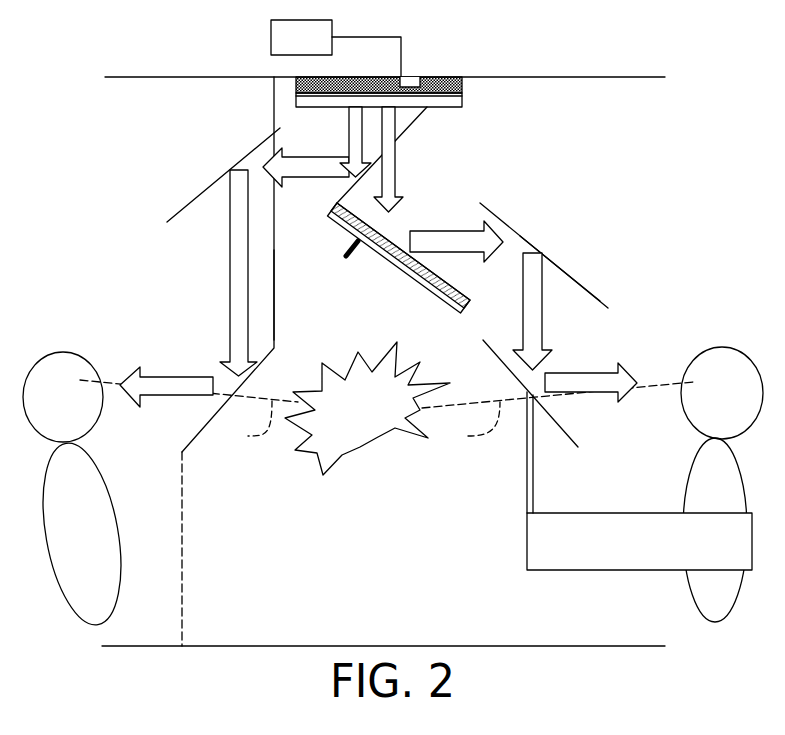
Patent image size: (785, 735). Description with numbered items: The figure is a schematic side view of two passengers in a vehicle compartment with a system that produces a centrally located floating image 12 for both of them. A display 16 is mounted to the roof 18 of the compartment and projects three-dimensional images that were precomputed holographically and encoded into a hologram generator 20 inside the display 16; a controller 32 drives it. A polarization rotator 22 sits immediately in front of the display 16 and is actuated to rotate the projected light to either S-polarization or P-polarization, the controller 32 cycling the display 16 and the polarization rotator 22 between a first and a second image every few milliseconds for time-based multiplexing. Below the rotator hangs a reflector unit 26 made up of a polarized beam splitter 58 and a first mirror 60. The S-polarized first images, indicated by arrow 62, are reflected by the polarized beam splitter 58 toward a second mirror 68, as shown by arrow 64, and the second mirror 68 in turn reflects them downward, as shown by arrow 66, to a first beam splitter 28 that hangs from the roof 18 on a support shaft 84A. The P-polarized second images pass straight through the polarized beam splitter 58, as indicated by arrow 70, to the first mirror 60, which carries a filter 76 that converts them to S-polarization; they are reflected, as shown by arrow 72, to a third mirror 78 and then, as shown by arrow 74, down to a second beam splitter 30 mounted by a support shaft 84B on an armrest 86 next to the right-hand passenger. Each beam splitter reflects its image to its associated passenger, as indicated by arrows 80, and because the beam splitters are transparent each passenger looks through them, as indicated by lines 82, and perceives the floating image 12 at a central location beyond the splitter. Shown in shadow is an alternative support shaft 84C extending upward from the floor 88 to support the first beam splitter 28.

The floating image 12 is at (376, 421).
The display 16 is at (438, 83).
The roof 18 is at (607, 77).
The hologram generator 20 is at (410, 84).
The polarization rotator 22 is at (448, 100).
The reflector unit 26 is at (346, 257).
The first beam splitter 28 is at (192, 442).
The second beam splitter 30 is at (566, 440).
The controller 32 is at (314, 47).
The polarized beam splitter 58 is at (403, 118).
The first mirror 60 is at (420, 286).
The arrow 62 is at (352, 120).
The arrow 64 is at (323, 168).
The arrow 66 is at (235, 278).
The second mirror 68 is at (217, 180).
The arrow 70 is at (390, 180).
The arrow 72 is at (445, 242).
The arrow 74 is at (535, 302).
The filter 76 is at (455, 287).
The third mirror 78 is at (555, 260).
The arrows 80 is at (177, 382).
The lines 82 is at (358, 426).
The support shaft 84A is at (274, 320).
The support shaft 84B is at (523, 485).
The support shaft 84C is at (182, 593).
The armrest 86 is at (651, 553).
The floor 88 is at (507, 646).